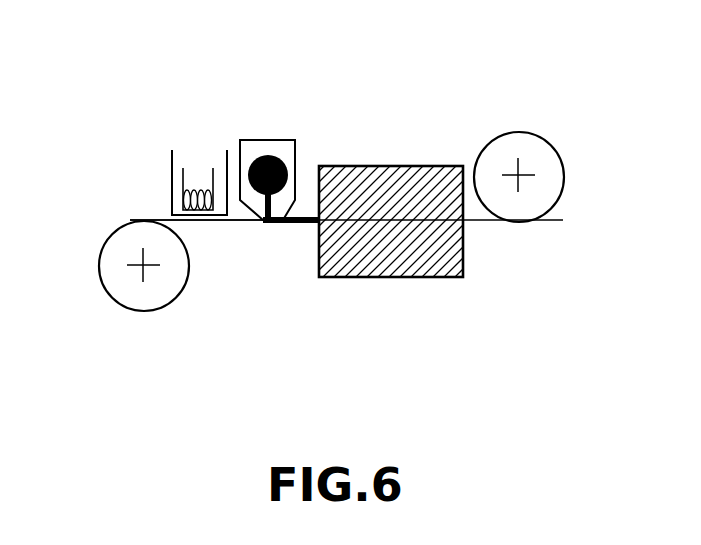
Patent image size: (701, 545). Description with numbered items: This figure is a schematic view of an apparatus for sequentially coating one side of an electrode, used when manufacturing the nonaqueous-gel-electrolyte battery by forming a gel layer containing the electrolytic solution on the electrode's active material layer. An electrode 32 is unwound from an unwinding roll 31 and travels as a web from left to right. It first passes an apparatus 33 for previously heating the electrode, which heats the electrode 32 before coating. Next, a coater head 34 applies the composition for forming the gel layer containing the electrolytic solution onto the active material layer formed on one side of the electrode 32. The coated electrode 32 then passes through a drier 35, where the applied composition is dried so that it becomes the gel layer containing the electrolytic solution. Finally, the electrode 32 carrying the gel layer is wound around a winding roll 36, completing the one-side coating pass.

The unwinding roll 31 is at (143, 312).
The electrode 32 is at (160, 220).
The apparatus for previously heating an electrode 33 is at (192, 172).
The coater head 34 is at (282, 143).
The drier 35 is at (413, 277).
The winding roll 36 is at (520, 133).